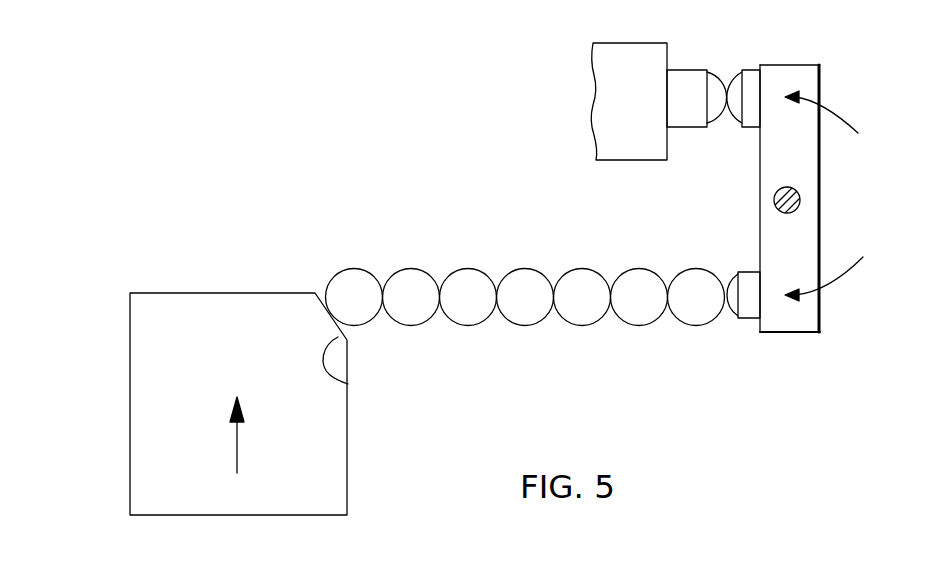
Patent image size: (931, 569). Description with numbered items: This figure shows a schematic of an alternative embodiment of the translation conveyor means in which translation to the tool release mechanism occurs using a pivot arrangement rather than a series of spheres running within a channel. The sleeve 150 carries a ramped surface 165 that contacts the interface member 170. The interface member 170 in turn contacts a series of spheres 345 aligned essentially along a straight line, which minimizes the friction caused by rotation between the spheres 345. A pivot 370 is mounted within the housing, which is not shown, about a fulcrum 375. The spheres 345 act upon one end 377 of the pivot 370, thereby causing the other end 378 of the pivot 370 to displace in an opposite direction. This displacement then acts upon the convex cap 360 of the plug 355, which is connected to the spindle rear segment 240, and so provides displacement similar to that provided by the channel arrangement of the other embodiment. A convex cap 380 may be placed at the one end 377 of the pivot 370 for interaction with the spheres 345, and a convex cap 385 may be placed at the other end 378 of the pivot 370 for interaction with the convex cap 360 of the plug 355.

The sleeve 150 is at (143, 453).
The ramped surface 165 is at (350, 385).
The interface member 170 is at (348, 292).
The spheres 345 is at (513, 274).
The spindle rear segment 240 is at (628, 65).
The plug 355 is at (678, 83).
The convex cap 360 is at (720, 78).
The convex cap 385 is at (732, 83).
The pivot 370 is at (817, 216).
The fulcrum 375 is at (800, 201).
The other end of the pivot 378 is at (798, 72).
The one end of the pivot 377 is at (795, 333).
The convex cap 380 is at (735, 298).